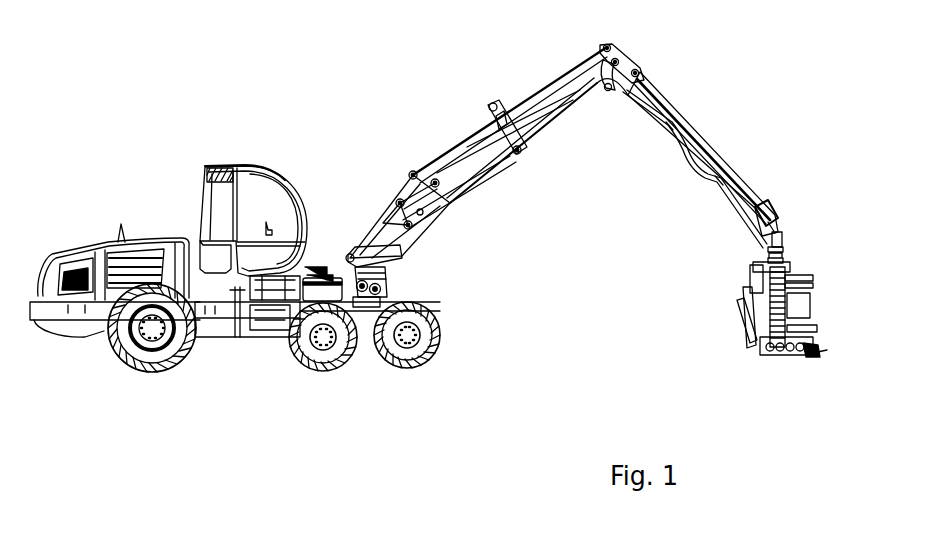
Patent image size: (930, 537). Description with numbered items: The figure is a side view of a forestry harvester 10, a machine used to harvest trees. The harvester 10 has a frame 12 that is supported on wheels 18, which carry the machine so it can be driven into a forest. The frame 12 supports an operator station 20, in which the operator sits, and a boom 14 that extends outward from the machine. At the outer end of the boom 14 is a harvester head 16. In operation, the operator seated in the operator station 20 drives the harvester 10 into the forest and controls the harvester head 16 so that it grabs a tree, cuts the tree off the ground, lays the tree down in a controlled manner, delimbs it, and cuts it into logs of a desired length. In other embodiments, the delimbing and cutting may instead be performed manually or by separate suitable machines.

The forestry harvester 10 is at (278, 132).
The frame 12 is at (212, 345).
The boom 14 is at (560, 125).
The harvester head 16 is at (758, 357).
The wheels 18 is at (152, 372).
The operator station 20 is at (302, 202).